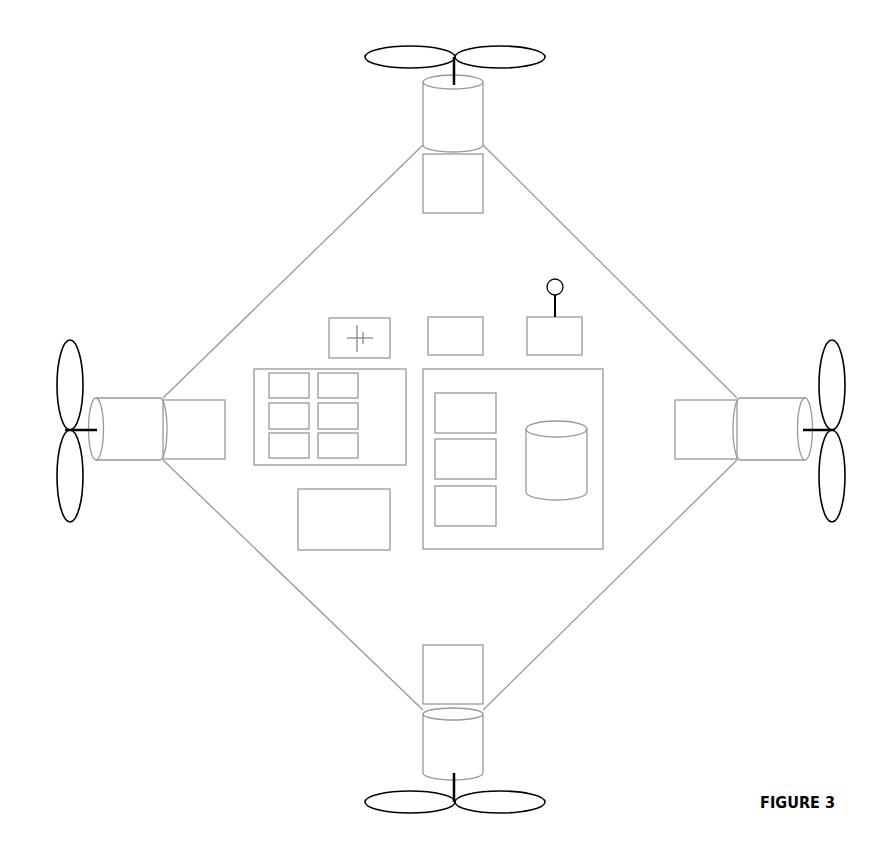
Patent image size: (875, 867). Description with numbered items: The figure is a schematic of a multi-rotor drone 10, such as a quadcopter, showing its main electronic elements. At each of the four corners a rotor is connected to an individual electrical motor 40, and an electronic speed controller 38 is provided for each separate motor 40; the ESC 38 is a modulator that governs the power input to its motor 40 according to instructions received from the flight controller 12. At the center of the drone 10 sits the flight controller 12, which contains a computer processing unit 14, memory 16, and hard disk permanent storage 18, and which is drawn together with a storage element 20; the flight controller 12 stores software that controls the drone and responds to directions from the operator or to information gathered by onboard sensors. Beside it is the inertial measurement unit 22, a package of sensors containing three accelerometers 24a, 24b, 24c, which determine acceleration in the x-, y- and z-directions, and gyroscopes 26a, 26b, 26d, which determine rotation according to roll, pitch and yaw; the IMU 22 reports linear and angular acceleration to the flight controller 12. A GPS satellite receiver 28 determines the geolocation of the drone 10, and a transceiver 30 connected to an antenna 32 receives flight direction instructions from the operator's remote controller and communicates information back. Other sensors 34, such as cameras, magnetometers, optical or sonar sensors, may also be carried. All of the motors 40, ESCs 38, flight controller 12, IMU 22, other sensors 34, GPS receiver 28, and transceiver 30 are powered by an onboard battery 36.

The drone 10 is at (442, 268).
The flight controller 12 is at (583, 402).
The computer processing unit 14 is at (456, 420).
The memory 16 is at (456, 468).
The hard disk permanent storage 18 is at (456, 514).
The data storage 20 is at (546, 468).
The inertial measurement unit 22 is at (375, 398).
The accelerometer 24a is at (278, 394).
The accelerometer 24b is at (278, 424).
The accelerometer 24c is at (278, 454).
The gyroscope 26a is at (326, 394).
The gyroscope 26b is at (326, 424).
The sensor 26d is at (326, 454).
The GPS satellite receiver 28 is at (447, 344).
The transceiver 30 is at (547, 344).
The antenna 32 is at (545, 286).
The other sensors 34 is at (335, 528).
The battery 36 is at (368, 322).
The electronic speed controller 38 is at (450, 429).
The electrical motor 40 is at (451, 429).